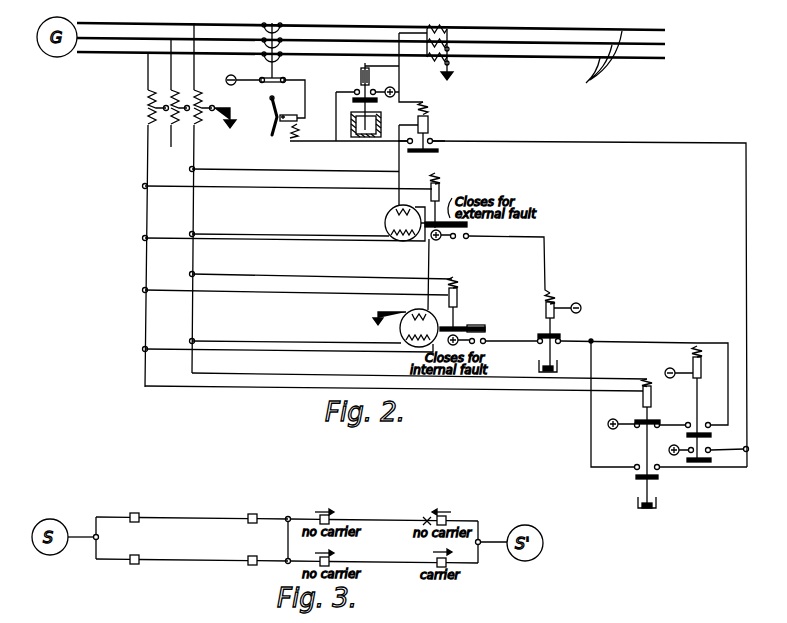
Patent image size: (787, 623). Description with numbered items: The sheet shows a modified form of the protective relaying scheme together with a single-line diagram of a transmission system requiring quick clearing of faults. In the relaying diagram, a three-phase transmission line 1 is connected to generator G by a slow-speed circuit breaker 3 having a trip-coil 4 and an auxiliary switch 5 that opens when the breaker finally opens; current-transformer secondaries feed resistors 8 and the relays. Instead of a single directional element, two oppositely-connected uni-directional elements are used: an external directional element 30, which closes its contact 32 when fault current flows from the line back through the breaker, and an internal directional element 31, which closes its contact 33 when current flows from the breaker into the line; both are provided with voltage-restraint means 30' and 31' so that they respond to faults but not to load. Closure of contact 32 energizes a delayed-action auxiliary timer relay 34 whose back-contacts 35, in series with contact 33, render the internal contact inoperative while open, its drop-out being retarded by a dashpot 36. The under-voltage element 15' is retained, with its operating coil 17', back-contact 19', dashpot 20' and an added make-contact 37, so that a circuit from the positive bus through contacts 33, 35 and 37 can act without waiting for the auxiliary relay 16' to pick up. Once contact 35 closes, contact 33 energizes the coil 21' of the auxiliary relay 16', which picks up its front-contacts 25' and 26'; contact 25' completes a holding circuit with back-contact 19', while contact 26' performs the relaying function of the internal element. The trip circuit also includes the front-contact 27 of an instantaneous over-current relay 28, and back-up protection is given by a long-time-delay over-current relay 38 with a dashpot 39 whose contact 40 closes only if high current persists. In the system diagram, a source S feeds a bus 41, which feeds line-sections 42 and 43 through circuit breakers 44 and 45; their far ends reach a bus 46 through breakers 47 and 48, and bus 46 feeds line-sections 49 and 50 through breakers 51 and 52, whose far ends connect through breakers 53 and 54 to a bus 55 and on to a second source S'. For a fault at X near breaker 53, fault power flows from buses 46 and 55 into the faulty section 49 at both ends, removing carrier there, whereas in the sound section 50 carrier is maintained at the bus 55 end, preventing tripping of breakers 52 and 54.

In FIG. 2, the transmission line 1 is at (600, 58).
In FIG. 2, the circuit breaker 3 is at (278, 27).
In FIG. 2, the trip-coil 4 is at (290, 139).
In FIG. 2, the auxiliary switch 5 is at (262, 86).
In FIG. 2, the resistors 8 is at (441, 26).
In FIG. 2, the under-voltage element 15' is at (643, 373).
In FIG. 2, the auxiliary relay 16' is at (679, 361).
In FIG. 2, the operating coil 17' is at (665, 443).
In FIG. 2, the back-contact 19' is at (646, 415).
In FIG. 2, the dashpot 20' is at (665, 505).
In FIG. 2, the coil 21' is at (710, 403).
In FIG. 2, the front-contact 25' is at (714, 394).
In FIG. 2, the front-contact 26' is at (709, 458).
In FIG. 2, the front-contact 27 is at (433, 143).
In FIG. 2, the over-current relay 28 is at (428, 109).
In FIG. 2, the external directional element 30 is at (392, 222).
In FIG. 2, the voltage-restraint means 30' is at (449, 198).
In FIG. 2, the internal directional element 31 is at (405, 321).
In FIG. 2, the voltage-restraint means 31' is at (466, 304).
In FIG. 2, the contact 32 is at (460, 240).
In FIG. 2, the contact 33 is at (478, 345).
In FIG. 2, the auxiliary timer relay 34 is at (553, 297).
In FIG. 2, the back-contacts 35 is at (540, 349).
In FIG. 2, the dashpot 36 is at (539, 366).
In FIG. 2, the make-contact 37 is at (662, 470).
In FIG. 2, the over-current relay 38 is at (361, 70).
In FIG. 2, the dashpot 39 is at (366, 138).
In FIG. 2, the contact 40 is at (354, 91).
In FIG. 3, the bus 41 is at (95, 515).
In FIG. 3, the line-section 42 is at (191, 517).
In FIG. 3, the line-section 43 is at (183, 561).
In FIG. 3, the circuit breaker 44 is at (134, 512).
In FIG. 3, the circuit breaker 45 is at (137, 564).
In FIG. 3, the bus 46 is at (288, 541).
In FIG. 3, the circuit breaker 47 is at (253, 513).
In FIG. 3, the circuit breaker 48 is at (256, 565).
In FIG. 3, the line-section 49 is at (380, 520).
In FIG. 3, the line-section 50 is at (385, 562).
In FIG. 3, the breaker 51 is at (331, 516).
In FIG. 3, the breaker 52 is at (332, 559).
In FIG. 3, the breaker 53 is at (447, 518).
In FIG. 3, the breaker 54 is at (449, 561).
In FIG. 3, the bus 55 is at (481, 538).